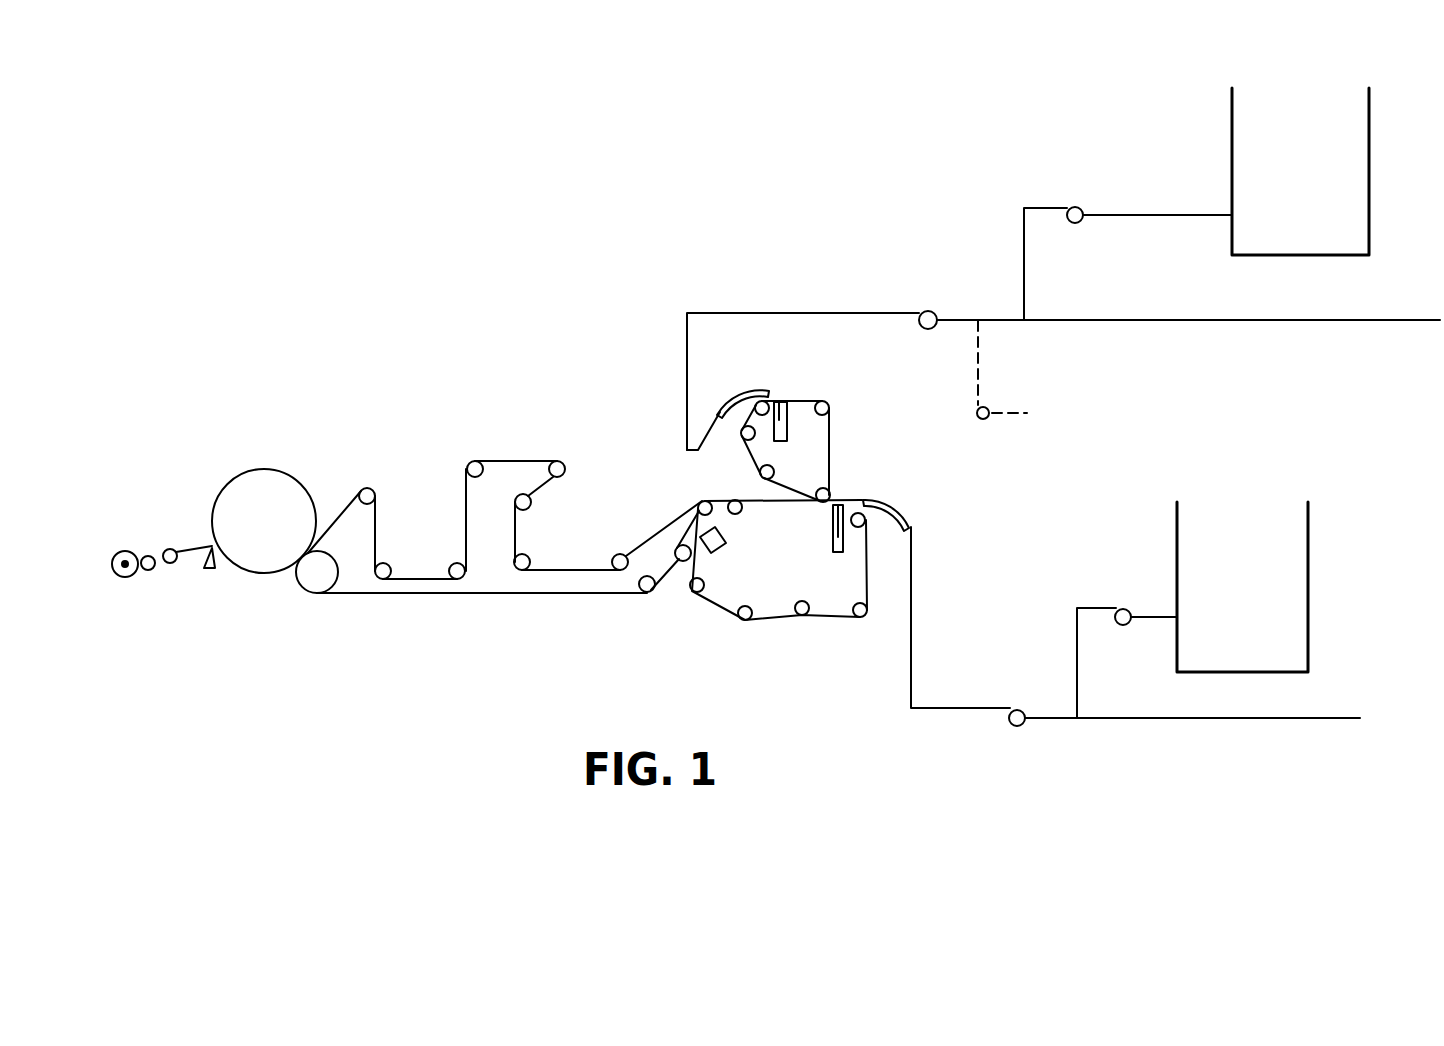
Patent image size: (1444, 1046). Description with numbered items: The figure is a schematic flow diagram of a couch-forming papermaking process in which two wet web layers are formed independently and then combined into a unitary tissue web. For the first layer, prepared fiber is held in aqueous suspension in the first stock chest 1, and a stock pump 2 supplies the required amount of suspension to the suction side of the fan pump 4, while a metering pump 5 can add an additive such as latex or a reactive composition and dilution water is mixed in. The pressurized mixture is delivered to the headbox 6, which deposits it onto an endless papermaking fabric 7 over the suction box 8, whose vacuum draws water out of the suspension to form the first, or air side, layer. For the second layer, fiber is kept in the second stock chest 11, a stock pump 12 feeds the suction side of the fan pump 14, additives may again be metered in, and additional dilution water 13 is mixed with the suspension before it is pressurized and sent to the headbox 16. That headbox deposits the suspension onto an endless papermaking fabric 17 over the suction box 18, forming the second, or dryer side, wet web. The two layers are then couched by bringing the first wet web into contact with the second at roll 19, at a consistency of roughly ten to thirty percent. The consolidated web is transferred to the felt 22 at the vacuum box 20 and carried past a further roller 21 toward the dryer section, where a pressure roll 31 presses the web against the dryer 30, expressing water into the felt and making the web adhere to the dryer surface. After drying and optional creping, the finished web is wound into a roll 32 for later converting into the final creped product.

The first stock chest 1 is at (1369, 127).
The stock pump 2 is at (1078, 208).
The fan pump 4 is at (928, 309).
The metering pump 5 is at (981, 420).
The headbox 6 is at (732, 388).
The endless papermaking fabric 7 is at (836, 432).
The suction box 8 is at (787, 423).
The second stock chest 11 is at (1310, 550).
The stock pump 12 is at (1128, 608).
The dilution water 13 is at (1323, 718).
The fan pump 14 is at (1020, 726).
The headbox 16 is at (900, 505).
The endless papermaking fabric 17 is at (770, 616).
The suction box 18 is at (828, 533).
The roll 19 is at (833, 482).
The vacuum box 20 is at (725, 542).
The roller 21 is at (738, 513).
The felt 22 is at (585, 594).
The dryer 30 is at (288, 470).
The pressure roll 31 is at (335, 584).
The roll 32 is at (123, 551).